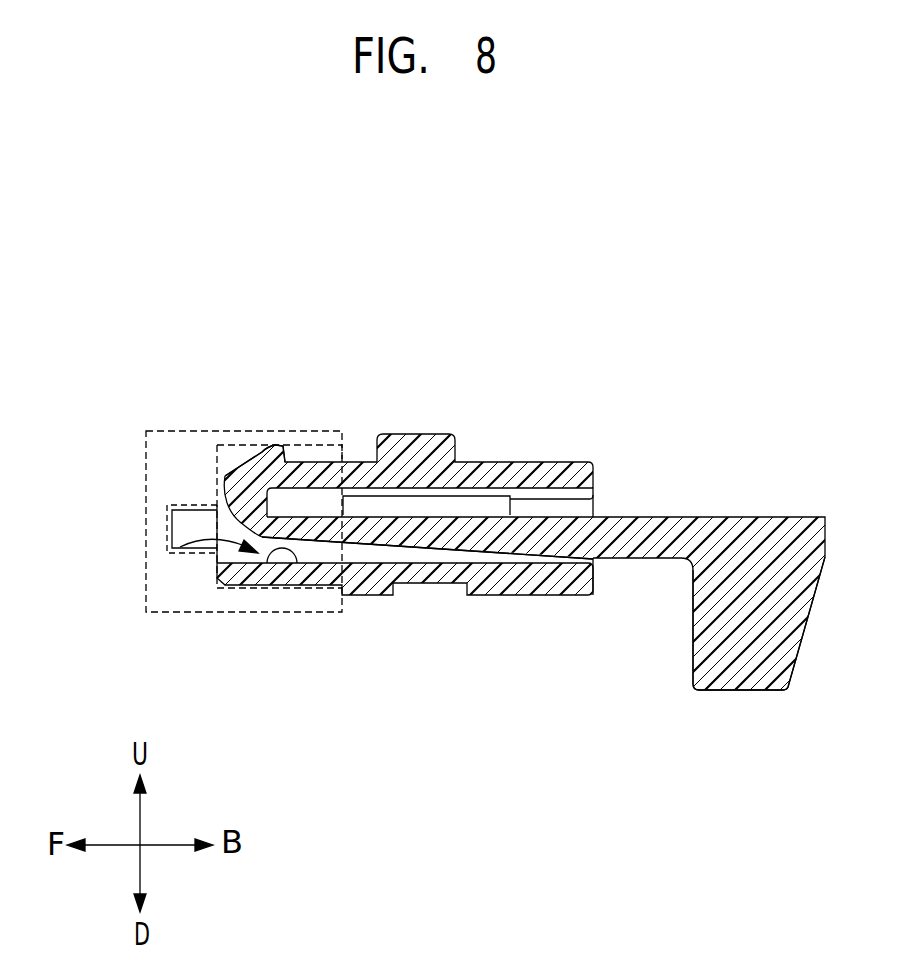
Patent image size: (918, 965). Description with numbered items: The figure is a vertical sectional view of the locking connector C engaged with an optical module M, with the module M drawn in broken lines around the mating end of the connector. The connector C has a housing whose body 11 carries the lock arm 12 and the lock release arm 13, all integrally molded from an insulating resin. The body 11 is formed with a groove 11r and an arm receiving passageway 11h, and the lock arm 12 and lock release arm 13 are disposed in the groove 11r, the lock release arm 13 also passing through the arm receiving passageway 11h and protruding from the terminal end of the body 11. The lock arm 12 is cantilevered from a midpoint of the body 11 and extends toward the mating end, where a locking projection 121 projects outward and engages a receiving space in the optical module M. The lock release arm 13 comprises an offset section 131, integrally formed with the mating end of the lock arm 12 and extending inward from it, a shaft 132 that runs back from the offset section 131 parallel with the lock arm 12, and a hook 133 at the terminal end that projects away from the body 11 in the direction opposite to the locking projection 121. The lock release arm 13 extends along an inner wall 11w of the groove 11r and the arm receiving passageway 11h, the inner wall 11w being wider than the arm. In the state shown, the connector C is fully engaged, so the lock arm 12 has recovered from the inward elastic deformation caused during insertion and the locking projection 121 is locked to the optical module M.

The body 11 is at (541, 617).
The arm receiving passageway 11h is at (583, 494).
The groove 11r is at (170, 553).
The inner wall 11w is at (267, 565).
The lock arm 12 is at (358, 445).
The locking projection 121 is at (248, 463).
The lock release arm 13 is at (368, 558).
The offset section 131 is at (218, 505).
The shaft 132 is at (472, 583).
The hook 133 is at (745, 677).
The optical module M is at (190, 431).
The connector C is at (660, 304).